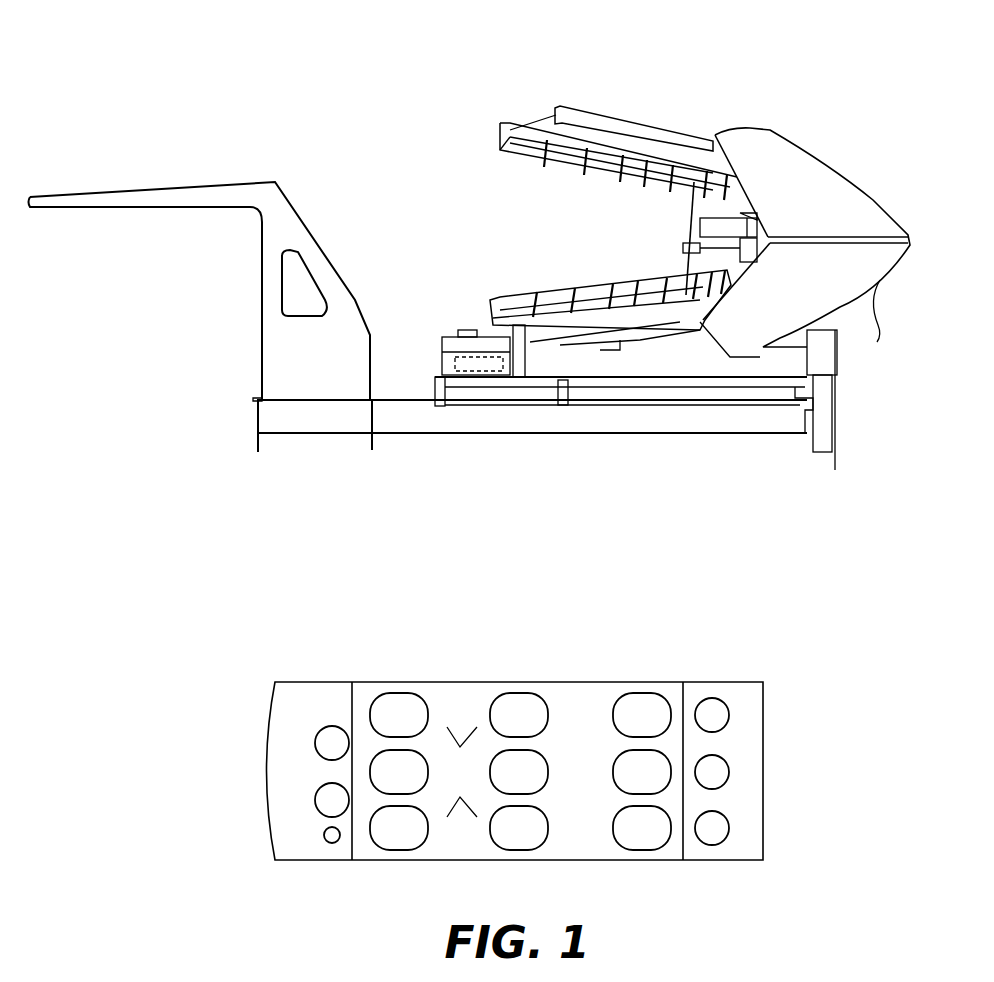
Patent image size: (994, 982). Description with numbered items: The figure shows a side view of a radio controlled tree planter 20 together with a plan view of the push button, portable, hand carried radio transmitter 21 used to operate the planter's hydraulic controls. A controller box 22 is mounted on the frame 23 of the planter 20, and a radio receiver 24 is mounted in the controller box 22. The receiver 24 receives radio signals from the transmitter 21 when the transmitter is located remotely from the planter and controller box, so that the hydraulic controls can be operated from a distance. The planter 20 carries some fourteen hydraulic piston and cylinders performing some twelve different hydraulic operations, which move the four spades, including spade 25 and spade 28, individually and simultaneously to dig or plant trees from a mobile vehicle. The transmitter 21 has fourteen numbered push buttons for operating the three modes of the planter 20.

The radio controlled planter 20 is at (546, 88).
The radio transmitter 21 is at (481, 681).
The controller box 22 is at (442, 365).
The frame 23 is at (617, 436).
The radio receiver 24 is at (459, 330).
The spade 25 is at (837, 165).
The spade 28 is at (890, 326).